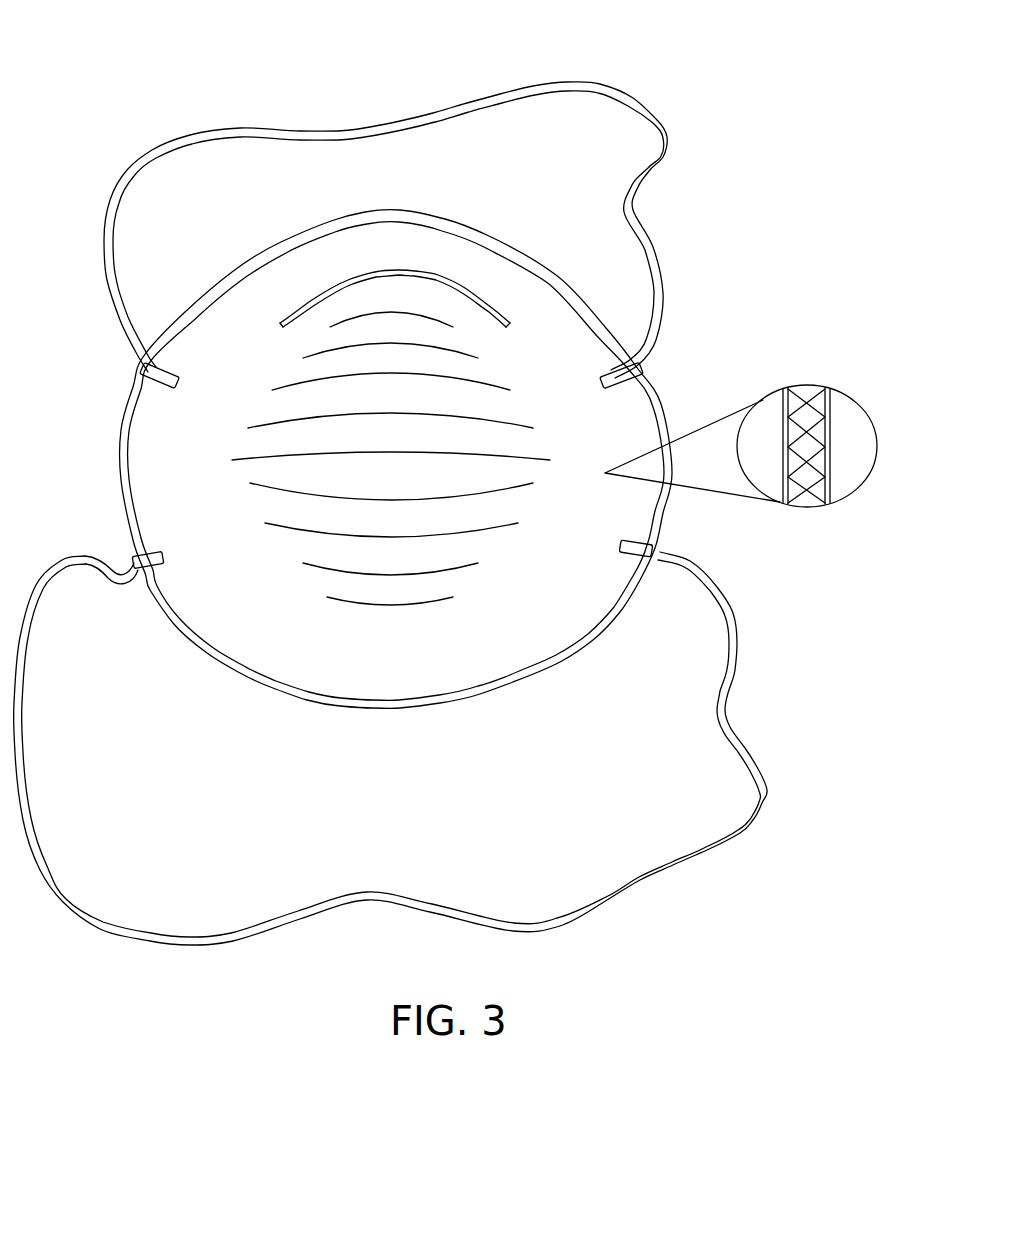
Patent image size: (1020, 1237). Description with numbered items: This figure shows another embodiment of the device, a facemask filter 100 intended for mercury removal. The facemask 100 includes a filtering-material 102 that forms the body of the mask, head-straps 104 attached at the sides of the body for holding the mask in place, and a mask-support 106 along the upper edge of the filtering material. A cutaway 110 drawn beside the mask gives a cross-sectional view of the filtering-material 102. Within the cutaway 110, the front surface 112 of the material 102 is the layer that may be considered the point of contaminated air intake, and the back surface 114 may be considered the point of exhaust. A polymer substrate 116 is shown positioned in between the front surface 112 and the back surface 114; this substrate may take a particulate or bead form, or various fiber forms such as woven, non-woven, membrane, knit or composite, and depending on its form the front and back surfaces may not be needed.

The facemask filter 100 is at (185, 98).
The filtering-material 102 is at (210, 440).
The head-straps 104 is at (308, 130).
The mask-support 106 is at (420, 274).
The cutaway 110 is at (764, 440).
The front surface 112 is at (785, 500).
The back surface 114 is at (830, 503).
The polymer substrate 116 is at (815, 427).